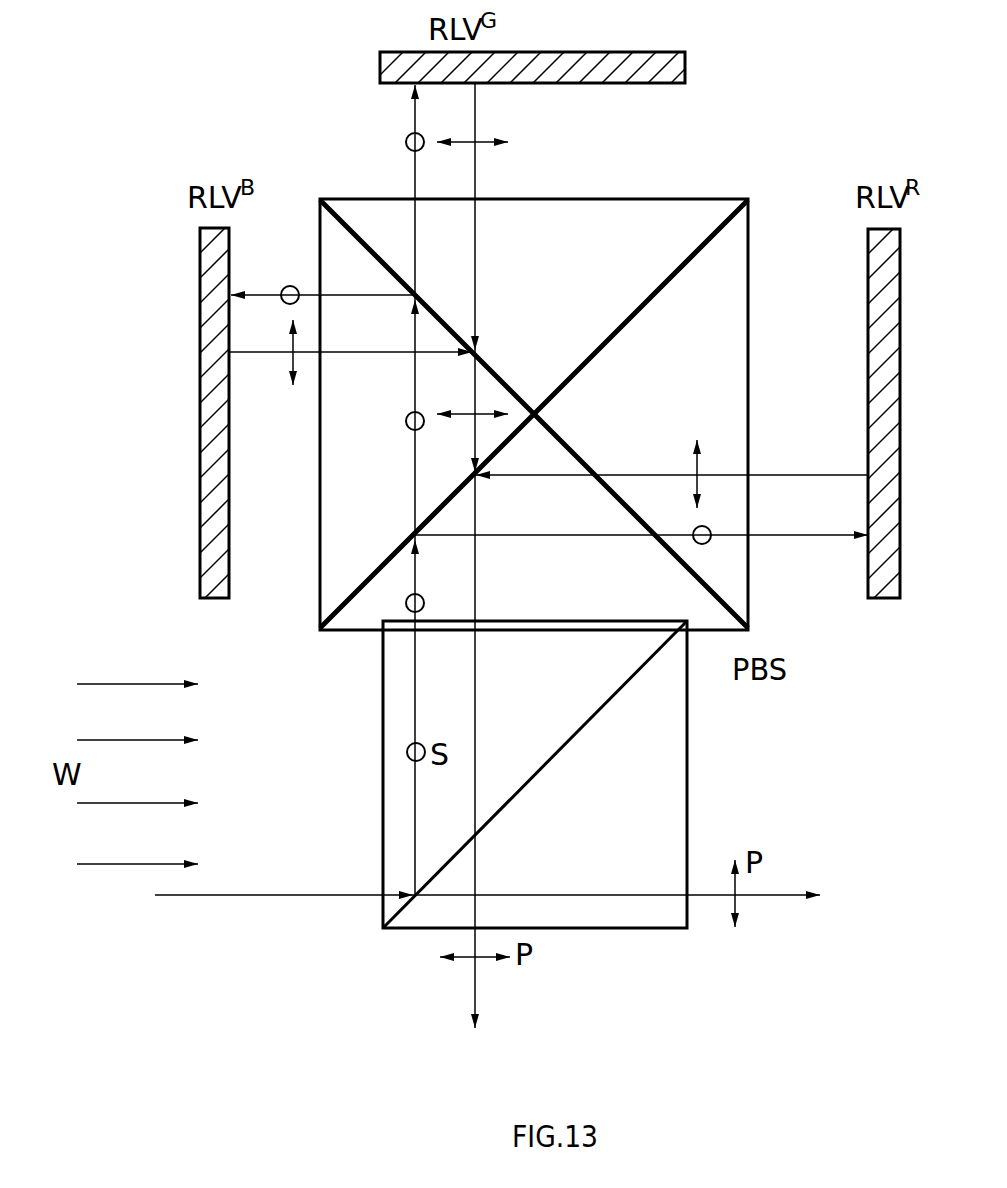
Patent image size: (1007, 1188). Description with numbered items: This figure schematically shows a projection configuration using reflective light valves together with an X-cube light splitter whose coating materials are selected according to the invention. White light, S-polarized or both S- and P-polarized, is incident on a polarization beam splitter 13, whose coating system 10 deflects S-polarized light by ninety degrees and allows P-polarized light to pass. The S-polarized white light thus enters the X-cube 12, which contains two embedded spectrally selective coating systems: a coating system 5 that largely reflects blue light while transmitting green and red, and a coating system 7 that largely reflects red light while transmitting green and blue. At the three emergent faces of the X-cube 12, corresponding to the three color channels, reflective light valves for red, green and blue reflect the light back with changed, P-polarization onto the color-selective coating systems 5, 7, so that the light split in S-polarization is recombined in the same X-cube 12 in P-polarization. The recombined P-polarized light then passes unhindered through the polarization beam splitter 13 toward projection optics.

The X-cube 12 is at (617, 223).
The spectrally selectively reflecting and transmitting coating system 7 is at (604, 347).
The spectrally selectively reflecting and transmitting coating system 5 is at (578, 450).
The polarization beam splitter 13 is at (665, 779).
The coating system 10 is at (523, 790).